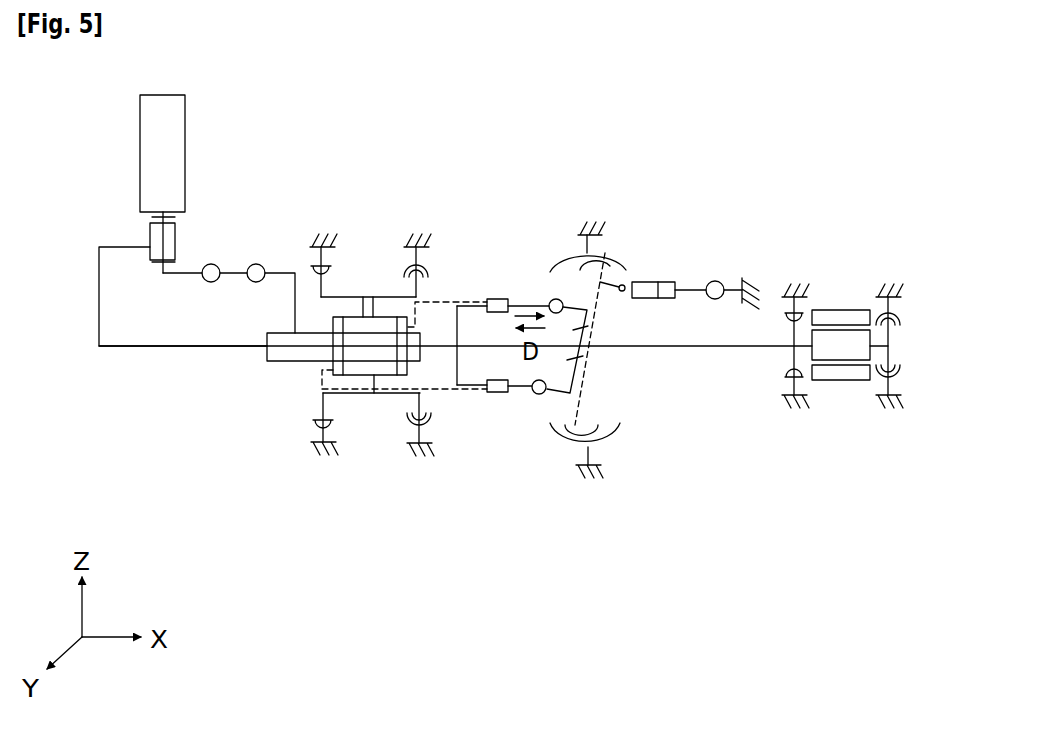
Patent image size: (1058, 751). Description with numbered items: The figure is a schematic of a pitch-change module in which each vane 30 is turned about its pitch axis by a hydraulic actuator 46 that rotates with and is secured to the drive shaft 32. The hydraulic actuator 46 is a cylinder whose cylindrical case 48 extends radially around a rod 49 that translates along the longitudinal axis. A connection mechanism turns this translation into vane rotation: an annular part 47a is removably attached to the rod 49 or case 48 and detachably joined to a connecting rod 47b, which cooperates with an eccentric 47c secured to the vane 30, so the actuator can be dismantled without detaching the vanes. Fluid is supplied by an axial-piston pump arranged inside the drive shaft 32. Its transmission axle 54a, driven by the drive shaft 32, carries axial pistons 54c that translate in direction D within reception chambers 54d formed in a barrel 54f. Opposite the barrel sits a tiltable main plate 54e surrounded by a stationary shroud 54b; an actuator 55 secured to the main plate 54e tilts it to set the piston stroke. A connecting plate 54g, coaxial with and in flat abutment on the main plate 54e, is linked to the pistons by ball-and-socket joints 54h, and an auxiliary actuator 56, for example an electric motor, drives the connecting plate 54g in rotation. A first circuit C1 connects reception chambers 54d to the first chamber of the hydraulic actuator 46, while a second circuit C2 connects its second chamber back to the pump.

The vane 30 is at (126, 117).
The drive shaft 32 is at (112, 348).
The hydraulic actuator 46 is at (248, 369).
The annular part 47a is at (278, 272).
The connecting rod 47b is at (233, 277).
The eccentric 47c is at (192, 272).
The case 48 is at (345, 316).
The rod 49 is at (280, 362).
The transmission axle 54a is at (442, 347).
The shroud 54b is at (574, 427).
The axial piston 54c is at (553, 298).
The reception chamber 54d is at (493, 298).
The main plate 54e is at (572, 393).
The barrel 54f is at (460, 378).
The connecting plate 54g is at (563, 260).
The ball-and-socket joint 54h is at (536, 396).
The actuator 55 is at (677, 282).
The auxiliary actuator 56 is at (849, 394).
The first circuit C1 is at (395, 393).
The second circuit C2 is at (453, 302).